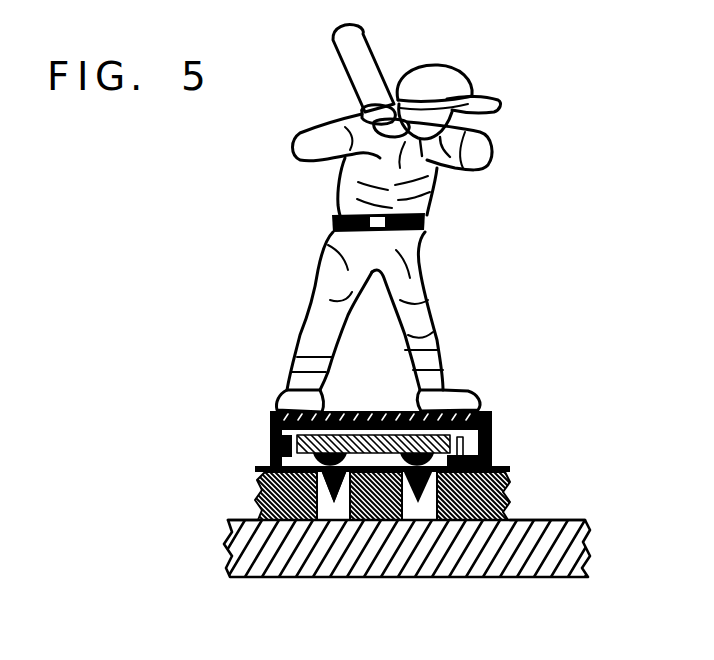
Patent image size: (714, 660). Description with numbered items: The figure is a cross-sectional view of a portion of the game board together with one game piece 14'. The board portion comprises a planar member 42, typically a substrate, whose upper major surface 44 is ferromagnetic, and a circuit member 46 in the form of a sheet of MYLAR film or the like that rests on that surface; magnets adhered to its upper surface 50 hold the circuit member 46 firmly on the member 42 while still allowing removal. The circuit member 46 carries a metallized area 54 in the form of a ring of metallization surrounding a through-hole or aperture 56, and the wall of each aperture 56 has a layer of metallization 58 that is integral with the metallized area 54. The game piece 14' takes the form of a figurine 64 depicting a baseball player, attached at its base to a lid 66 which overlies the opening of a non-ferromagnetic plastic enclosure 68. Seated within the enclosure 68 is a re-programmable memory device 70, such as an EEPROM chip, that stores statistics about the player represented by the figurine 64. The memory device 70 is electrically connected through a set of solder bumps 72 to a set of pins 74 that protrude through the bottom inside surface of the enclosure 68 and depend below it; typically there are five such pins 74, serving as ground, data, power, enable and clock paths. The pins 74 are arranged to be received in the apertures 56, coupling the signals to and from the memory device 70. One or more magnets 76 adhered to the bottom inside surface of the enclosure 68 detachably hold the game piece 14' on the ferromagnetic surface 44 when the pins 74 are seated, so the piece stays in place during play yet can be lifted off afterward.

The game piece 14' is at (410, 318).
The planar member 42 is at (586, 556).
The upper major surface 44 is at (565, 520).
The circuit member 46 is at (258, 520).
The upper surface 50 is at (498, 464).
The metallized area 54 is at (504, 474).
The aperture 56 is at (338, 506).
The layer of metallization 58 is at (437, 506).
The figurine 64 is at (496, 150).
The lid 66 is at (452, 397).
The enclosure 68 is at (492, 445).
The re-programmable memory device 70 is at (380, 452).
The solder bumps 72 is at (330, 452).
The pins 74 is at (266, 476).
The magnets 76 is at (268, 441).